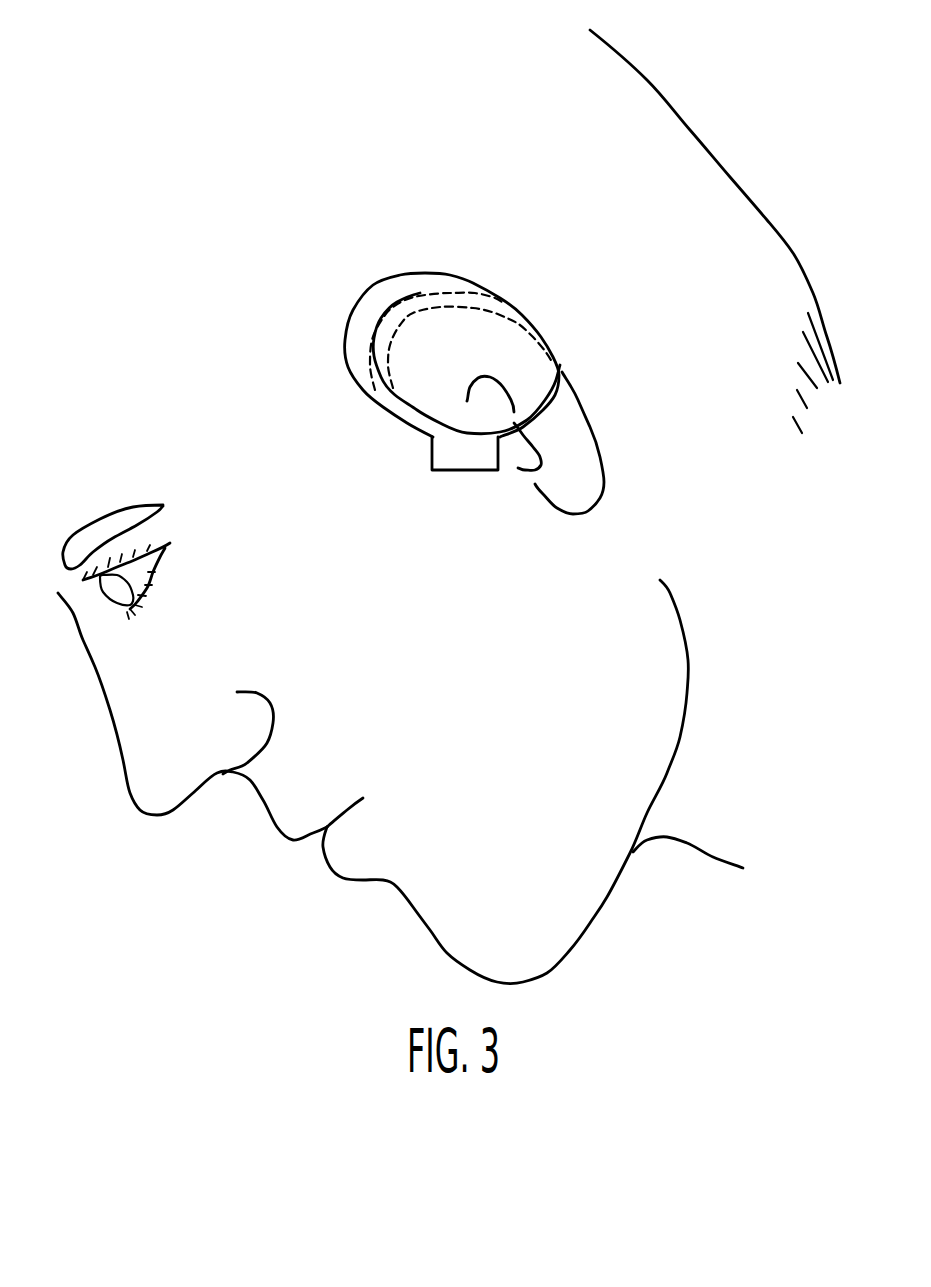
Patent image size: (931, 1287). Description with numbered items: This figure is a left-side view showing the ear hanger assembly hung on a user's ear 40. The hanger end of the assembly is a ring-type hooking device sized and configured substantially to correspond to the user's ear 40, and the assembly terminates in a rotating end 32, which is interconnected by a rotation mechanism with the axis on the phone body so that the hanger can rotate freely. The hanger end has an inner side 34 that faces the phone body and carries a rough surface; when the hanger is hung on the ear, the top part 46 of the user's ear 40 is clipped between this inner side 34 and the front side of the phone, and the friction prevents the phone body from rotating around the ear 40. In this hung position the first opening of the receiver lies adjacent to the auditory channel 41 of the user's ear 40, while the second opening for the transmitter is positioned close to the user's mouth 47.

The rotating end 32 is at (463, 463).
The inner side 34 is at (555, 375).
The user's ear 40 is at (587, 471).
The auditory channel 41 is at (383, 372).
The top part 46 is at (370, 307).
The user's mouth 47 is at (323, 840).